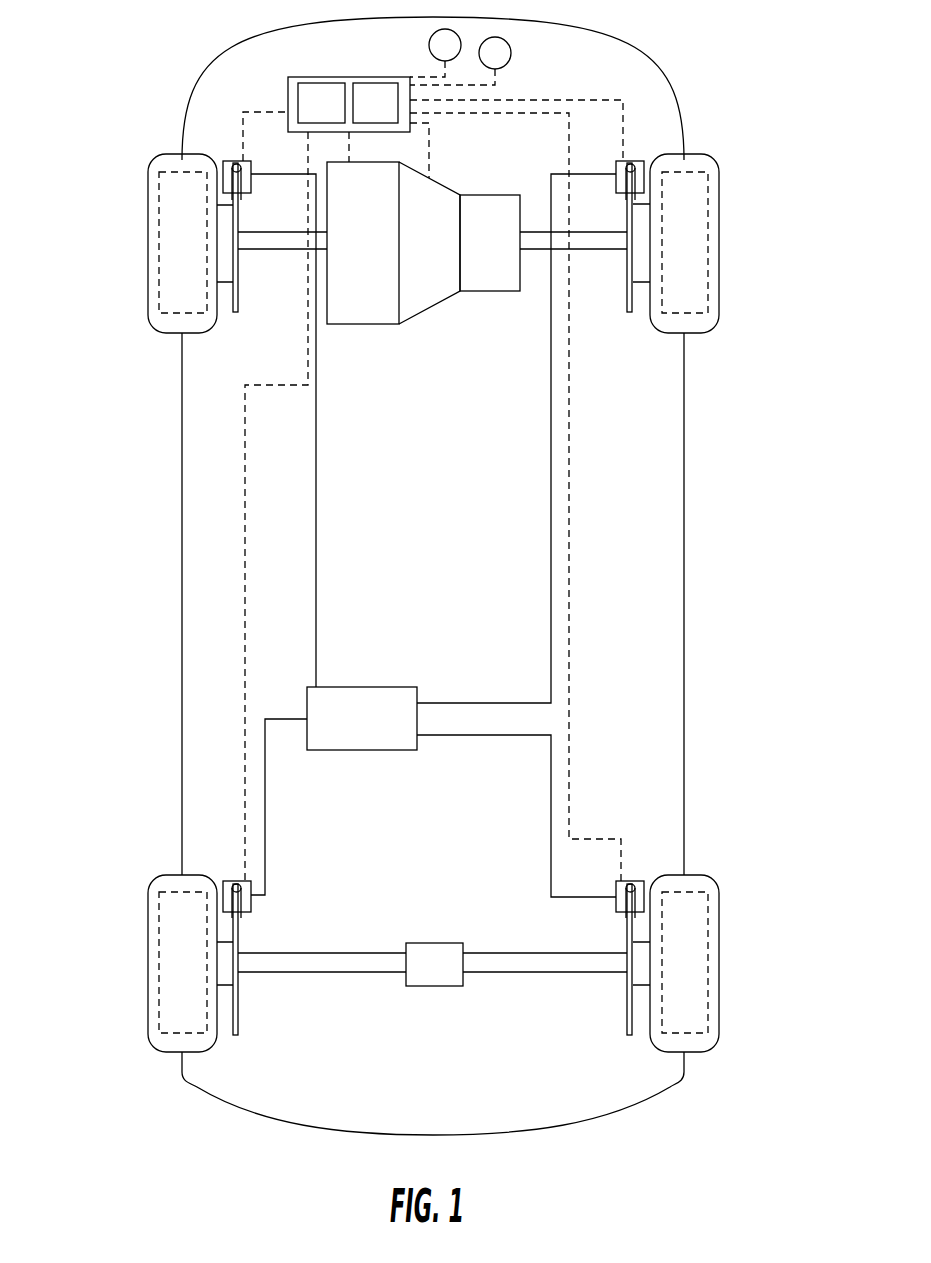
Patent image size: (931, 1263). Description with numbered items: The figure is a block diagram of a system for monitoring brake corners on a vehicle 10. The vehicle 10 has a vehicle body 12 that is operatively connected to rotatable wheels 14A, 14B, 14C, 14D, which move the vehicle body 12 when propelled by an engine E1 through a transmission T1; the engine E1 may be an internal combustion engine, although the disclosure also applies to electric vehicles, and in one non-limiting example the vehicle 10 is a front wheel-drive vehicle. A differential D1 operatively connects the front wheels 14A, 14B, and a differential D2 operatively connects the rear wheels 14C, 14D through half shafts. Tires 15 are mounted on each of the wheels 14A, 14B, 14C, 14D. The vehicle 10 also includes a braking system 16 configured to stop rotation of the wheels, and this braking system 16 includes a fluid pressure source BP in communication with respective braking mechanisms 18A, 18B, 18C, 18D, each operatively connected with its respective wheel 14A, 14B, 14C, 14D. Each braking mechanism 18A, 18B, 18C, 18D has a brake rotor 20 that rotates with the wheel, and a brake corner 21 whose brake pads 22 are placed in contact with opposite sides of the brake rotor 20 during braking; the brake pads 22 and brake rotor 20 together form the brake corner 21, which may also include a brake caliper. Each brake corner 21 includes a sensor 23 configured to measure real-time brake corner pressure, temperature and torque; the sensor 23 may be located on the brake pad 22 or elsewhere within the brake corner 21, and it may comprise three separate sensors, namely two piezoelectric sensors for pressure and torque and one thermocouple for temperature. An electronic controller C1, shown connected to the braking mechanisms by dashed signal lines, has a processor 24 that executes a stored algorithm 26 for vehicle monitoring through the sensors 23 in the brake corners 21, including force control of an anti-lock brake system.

The vehicle 10 is at (173, 41).
The vehicle body 12 is at (679, 98).
The wheel 14A is at (150, 200).
The wheel 14B is at (719, 192).
The wheel 14C is at (150, 925).
The wheel 14D is at (719, 925).
The tire 15 is at (148, 266).
The braking system 16 is at (375, 683).
The braking mechanism 18A is at (227, 153).
The braking mechanism 18B is at (632, 157).
The braking mechanism 18C is at (275, 885).
The braking mechanism 18D is at (631, 878).
The brake rotor 20 is at (242, 293).
The brake corner 21 is at (258, 167).
The brake pad 22 is at (240, 188).
The sensor 23 is at (237, 164).
The processor 24 is at (298, 95).
The stored algorithm 26 is at (371, 83).
The electronic controller C1 is at (347, 77).
The engine E1 is at (366, 282).
The transmission T1 is at (441, 273).
The differential D1 is at (501, 267).
The differential D2 is at (448, 978).
The fluid pressure source BP is at (372, 731).